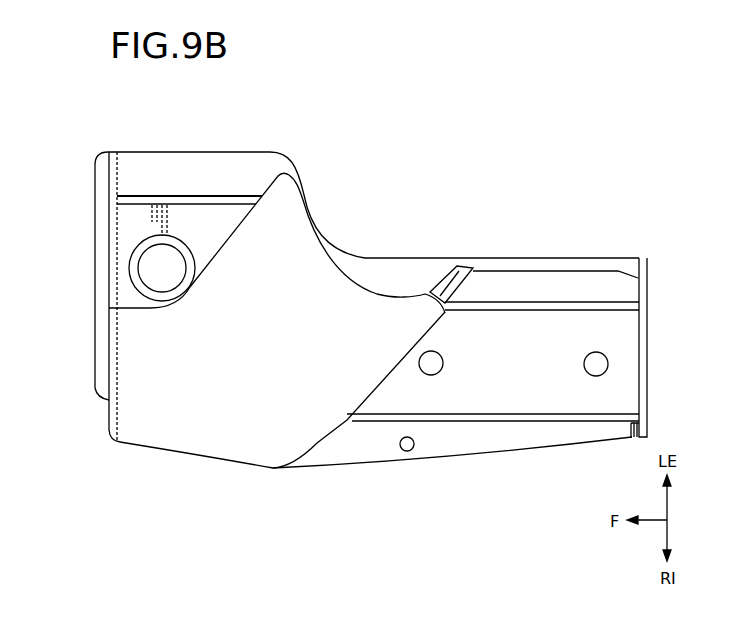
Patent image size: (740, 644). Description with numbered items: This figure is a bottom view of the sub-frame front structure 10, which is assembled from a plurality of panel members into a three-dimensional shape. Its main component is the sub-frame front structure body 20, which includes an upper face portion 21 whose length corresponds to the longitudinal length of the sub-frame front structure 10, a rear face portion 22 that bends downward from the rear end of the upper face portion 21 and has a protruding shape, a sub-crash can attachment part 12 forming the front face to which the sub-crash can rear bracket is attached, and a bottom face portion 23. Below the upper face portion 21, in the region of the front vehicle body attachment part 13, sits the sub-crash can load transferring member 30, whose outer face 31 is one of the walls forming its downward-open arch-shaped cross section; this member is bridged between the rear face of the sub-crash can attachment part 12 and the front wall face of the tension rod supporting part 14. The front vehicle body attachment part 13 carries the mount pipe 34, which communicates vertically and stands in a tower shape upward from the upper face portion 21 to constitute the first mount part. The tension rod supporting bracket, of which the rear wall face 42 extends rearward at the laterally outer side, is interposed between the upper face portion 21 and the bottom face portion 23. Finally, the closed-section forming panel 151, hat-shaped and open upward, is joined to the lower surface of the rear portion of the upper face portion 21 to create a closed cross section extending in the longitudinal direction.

The sub-frame front structure 10 is at (508, 182).
The sub-crash can attachment part 12 is at (117, 343).
The front vehicle body attachment part 13 is at (197, 168).
The tension rod supporting part 14 is at (315, 245).
The sub-frame front structure body 20 is at (365, 468).
The upper face portion 21 is at (398, 268).
The rear face portion 22 is at (648, 327).
The bottom face portion 23 is at (200, 447).
The sub-crash can load transferring member 30 is at (171, 192).
The outer face 31 is at (209, 195).
The mount pipe 34 is at (135, 252).
The rear wall face 42 is at (453, 277).
The closed-section forming panel 151 is at (473, 442).